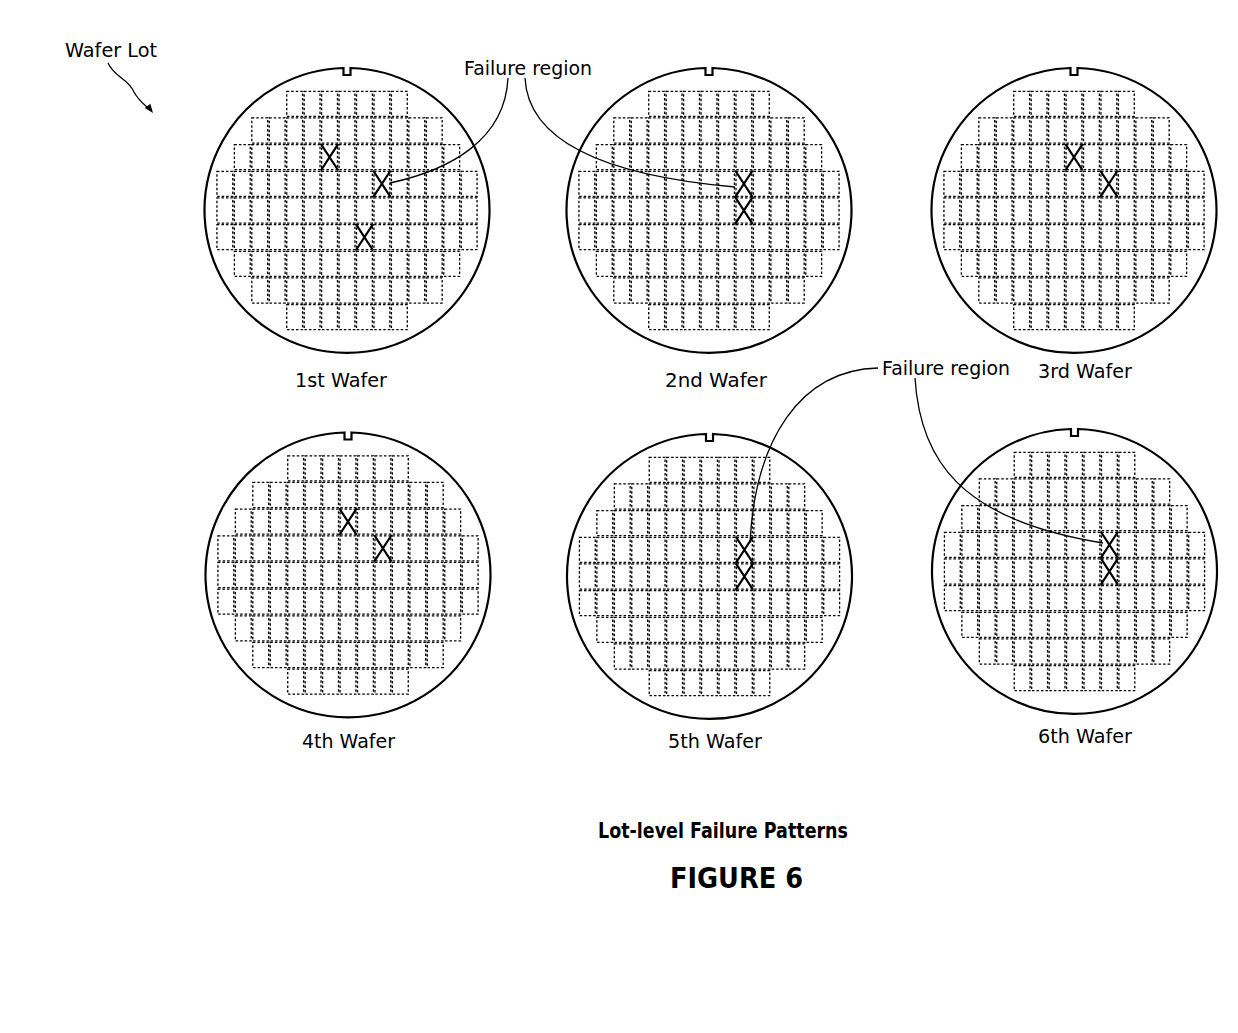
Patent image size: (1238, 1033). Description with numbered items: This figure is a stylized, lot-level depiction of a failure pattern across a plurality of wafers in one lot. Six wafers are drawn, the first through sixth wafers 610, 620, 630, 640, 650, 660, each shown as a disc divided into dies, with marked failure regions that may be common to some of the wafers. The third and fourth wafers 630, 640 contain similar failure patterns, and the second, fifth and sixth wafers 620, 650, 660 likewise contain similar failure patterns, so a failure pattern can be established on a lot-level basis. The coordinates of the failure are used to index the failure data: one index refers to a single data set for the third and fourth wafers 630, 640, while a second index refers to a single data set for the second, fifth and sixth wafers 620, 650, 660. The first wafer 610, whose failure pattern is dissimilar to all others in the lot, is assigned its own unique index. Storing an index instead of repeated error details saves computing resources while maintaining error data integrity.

The first wafer 610 is at (231, 293).
The second wafer 620 is at (633, 332).
The third wafer 630 is at (977, 314).
The fourth wafer 640 is at (244, 672).
The fifth wafer 650 is at (617, 685).
The sixth wafer 660 is at (985, 682).